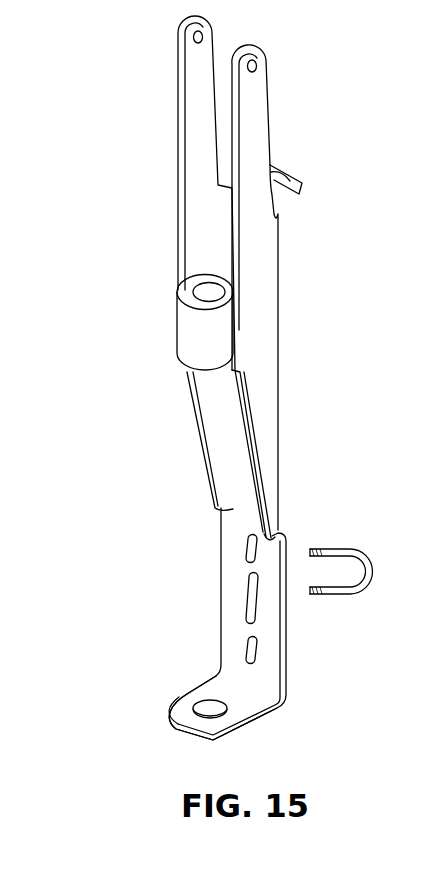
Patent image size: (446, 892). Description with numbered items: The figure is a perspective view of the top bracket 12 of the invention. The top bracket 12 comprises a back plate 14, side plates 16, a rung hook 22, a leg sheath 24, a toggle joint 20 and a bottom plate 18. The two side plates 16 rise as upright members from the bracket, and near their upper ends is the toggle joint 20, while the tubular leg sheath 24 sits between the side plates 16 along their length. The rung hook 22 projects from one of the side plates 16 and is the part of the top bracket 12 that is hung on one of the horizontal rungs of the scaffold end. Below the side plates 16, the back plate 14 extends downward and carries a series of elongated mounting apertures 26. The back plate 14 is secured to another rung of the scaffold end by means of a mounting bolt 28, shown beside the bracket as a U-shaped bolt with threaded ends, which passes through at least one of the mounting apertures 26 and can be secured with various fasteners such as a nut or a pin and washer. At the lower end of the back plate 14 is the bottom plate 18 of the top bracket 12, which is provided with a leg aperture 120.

The top bracket 12 is at (312, 291).
The back plate 14 is at (265, 660).
The side plates 16 is at (203, 218).
The bottom plate 18 is at (185, 700).
The toggle joint 20 is at (203, 38).
The rung hook 22 is at (300, 180).
The leg sheath 24 is at (200, 330).
The mounting apertures 26 is at (251, 650).
The mounting bolt 28 is at (363, 565).
The leg aperture 120 is at (209, 708).